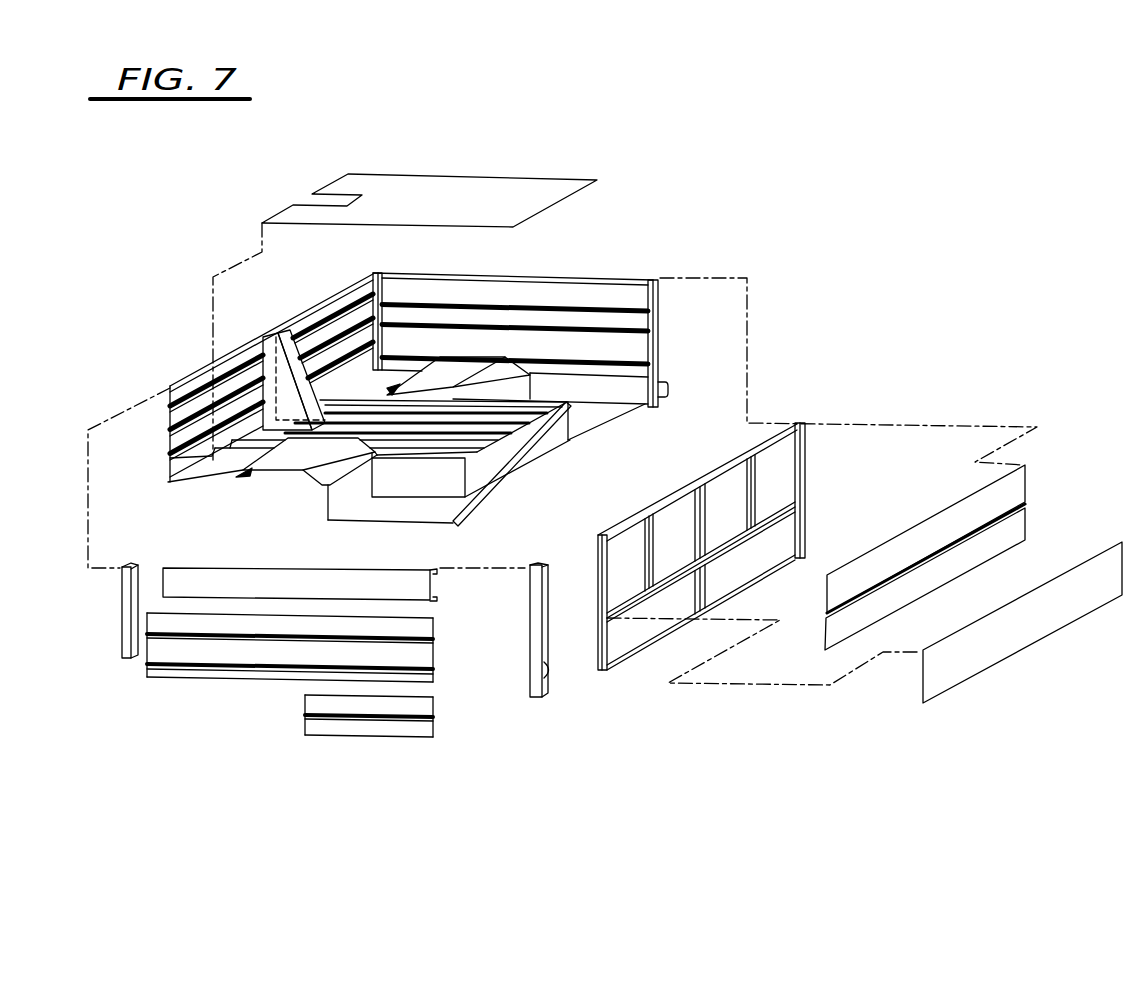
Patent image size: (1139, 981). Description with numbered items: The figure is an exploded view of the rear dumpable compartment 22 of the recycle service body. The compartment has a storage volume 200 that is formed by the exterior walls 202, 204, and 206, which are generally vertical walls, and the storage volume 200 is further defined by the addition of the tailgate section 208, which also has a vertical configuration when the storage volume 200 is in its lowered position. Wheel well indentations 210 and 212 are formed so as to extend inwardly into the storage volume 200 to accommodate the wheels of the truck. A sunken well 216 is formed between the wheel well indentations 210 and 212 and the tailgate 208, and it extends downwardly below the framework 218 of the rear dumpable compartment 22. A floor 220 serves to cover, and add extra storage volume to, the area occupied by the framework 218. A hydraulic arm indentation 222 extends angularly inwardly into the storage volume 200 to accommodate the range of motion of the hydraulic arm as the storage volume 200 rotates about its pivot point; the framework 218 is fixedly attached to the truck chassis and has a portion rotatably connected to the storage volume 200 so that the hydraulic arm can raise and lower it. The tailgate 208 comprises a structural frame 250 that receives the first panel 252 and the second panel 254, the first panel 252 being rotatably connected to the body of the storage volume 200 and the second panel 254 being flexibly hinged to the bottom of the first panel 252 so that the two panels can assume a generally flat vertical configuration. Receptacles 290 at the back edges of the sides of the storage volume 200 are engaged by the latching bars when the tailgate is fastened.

The rear dumpable compartment 22 is at (703, 238).
The storage volume 200 is at (527, 296).
The exterior wall 202 is at (569, 354).
The exterior wall 204 is at (337, 332).
The exterior wall 206 is at (305, 585).
The tailgate section 208 is at (955, 400).
The wheel well indentation 210 is at (288, 457).
The wheel well indentation 212 is at (471, 381).
The sunken well 216 is at (513, 475).
The framework 218 is at (517, 427).
The floor 220 is at (512, 190).
The hydraulic arm indentation 222 is at (277, 353).
The structural frame 250 is at (787, 423).
The first panel 252 is at (935, 535).
The second panel 254 is at (945, 678).
The receptacles 290 is at (668, 390).